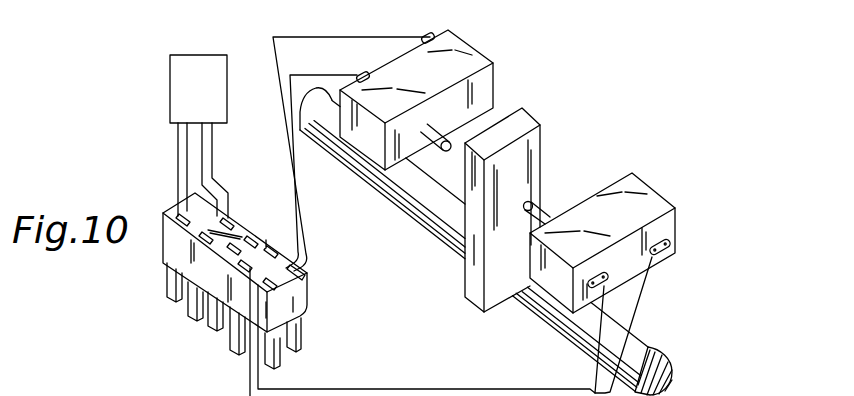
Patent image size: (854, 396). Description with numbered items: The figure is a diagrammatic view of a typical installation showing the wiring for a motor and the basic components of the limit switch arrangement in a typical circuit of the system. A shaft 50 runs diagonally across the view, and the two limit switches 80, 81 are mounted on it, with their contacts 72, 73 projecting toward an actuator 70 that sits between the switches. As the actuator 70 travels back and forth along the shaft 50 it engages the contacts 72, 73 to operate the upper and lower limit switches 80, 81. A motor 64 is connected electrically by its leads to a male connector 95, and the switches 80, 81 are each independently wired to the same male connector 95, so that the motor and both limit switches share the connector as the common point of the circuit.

The shaft 50 is at (656, 342).
The motor 64 is at (178, 72).
The actuator 70 is at (543, 153).
The contact 72 is at (434, 129).
The contact 73 is at (547, 209).
The limit switch 80 is at (478, 56).
The limit switch 81 is at (648, 192).
The male connector 95 is at (172, 252).